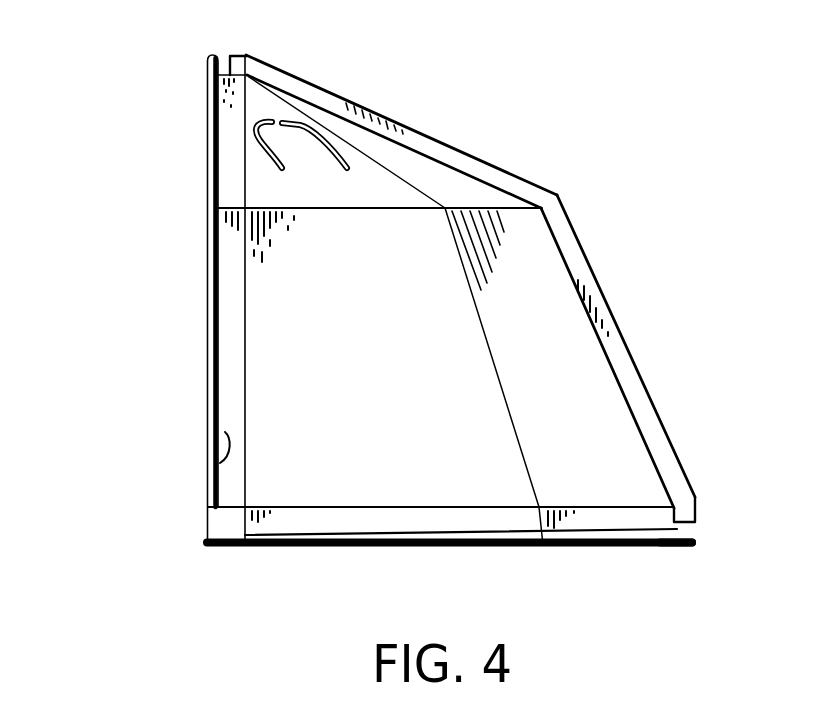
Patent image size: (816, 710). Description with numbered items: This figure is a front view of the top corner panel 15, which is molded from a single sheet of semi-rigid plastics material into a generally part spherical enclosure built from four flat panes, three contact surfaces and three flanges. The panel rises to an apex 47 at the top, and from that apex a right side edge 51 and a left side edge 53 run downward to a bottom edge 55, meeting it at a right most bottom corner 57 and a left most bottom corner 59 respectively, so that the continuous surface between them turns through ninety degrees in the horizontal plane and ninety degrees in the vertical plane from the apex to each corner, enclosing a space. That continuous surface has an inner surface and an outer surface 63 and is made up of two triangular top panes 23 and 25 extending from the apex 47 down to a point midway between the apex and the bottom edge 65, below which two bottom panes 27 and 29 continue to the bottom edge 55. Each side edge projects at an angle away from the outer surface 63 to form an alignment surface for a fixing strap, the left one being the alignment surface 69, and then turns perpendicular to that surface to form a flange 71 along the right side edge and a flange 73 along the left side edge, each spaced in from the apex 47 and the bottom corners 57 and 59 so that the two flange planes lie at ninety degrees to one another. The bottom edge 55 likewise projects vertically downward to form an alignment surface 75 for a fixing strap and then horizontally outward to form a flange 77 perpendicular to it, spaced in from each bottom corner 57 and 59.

The top corner panel 15 is at (166, 330).
The triangular top pane 23 is at (408, 162).
The triangular top pane 25 is at (275, 105).
The bottom pane 27 is at (548, 272).
The bottom pane 29 is at (280, 283).
The apex 47 is at (240, 70).
The right side edge 51 is at (623, 342).
The left side edge 53 is at (207, 107).
The bottom edge 55 is at (687, 548).
The right most bottom corner 57 is at (693, 527).
The left most bottom corner 59 is at (207, 542).
The outer surface 63 is at (457, 190).
The point midway between the apex and the bottom edge 65 is at (182, 132).
The alignment surface 69 is at (232, 376).
The flange 71 is at (642, 412).
The flange 73 is at (225, 432).
The alignment surface 75 is at (462, 523).
The flange 77 is at (292, 547).